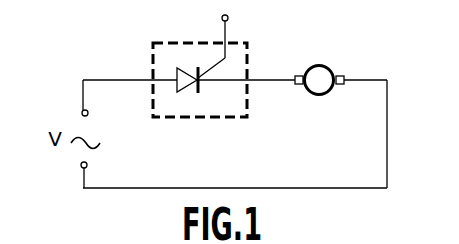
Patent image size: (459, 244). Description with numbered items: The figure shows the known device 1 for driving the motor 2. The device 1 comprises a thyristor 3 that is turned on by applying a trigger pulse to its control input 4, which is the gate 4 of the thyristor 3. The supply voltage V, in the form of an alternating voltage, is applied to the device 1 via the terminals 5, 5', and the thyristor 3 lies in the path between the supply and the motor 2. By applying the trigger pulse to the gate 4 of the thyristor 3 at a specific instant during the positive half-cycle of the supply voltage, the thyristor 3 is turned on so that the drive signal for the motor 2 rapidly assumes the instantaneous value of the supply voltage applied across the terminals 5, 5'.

The device 1 is at (152, 69).
The motor 2 is at (328, 72).
The thyristor 3 is at (185, 68).
The control input 4 is at (229, 18).
The terminal 5 is at (61, 109).
The terminal 5' is at (60, 171).